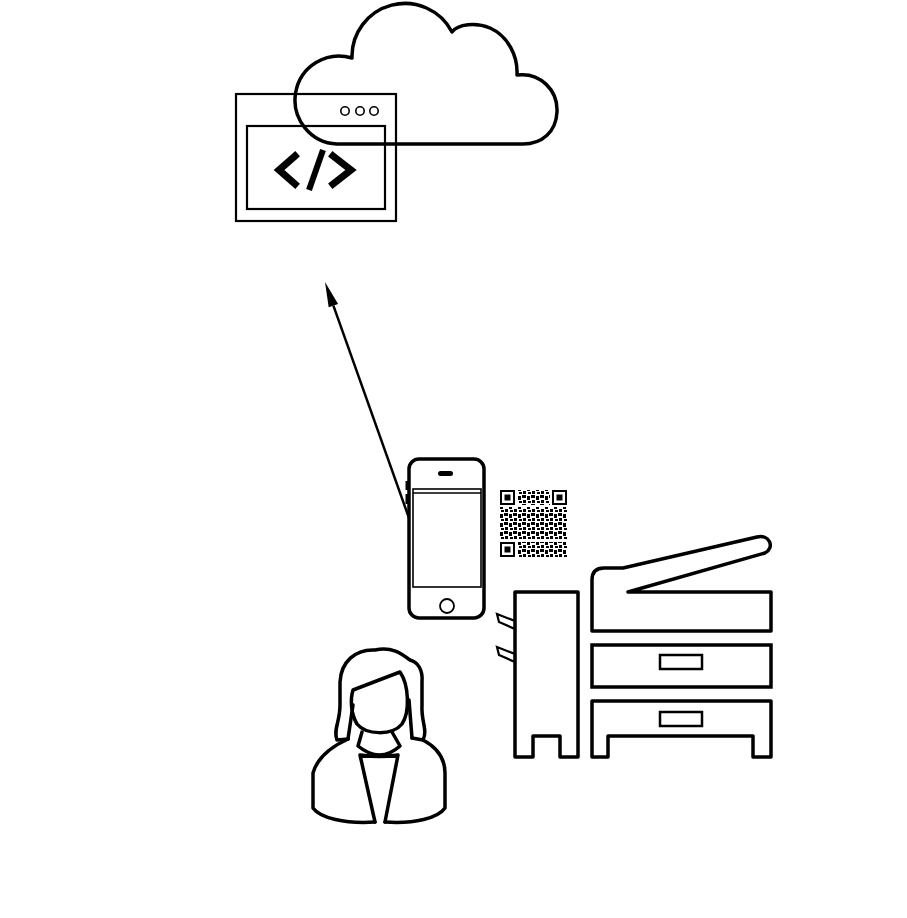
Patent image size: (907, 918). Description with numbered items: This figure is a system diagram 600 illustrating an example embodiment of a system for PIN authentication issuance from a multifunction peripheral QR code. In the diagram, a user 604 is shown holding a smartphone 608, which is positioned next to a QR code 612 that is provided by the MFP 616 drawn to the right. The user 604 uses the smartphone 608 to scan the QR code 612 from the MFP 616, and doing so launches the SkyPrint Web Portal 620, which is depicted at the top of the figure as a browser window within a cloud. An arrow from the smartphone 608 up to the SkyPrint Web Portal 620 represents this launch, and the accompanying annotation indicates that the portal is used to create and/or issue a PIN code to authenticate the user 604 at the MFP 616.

The system diagram 600 is at (840, 96).
The user 604 is at (415, 822).
The smartphone 608 is at (410, 618).
The QR code 612 is at (567, 522).
The MFP 616 is at (771, 667).
The SkyPrint Web Portal 620 is at (367, 222).